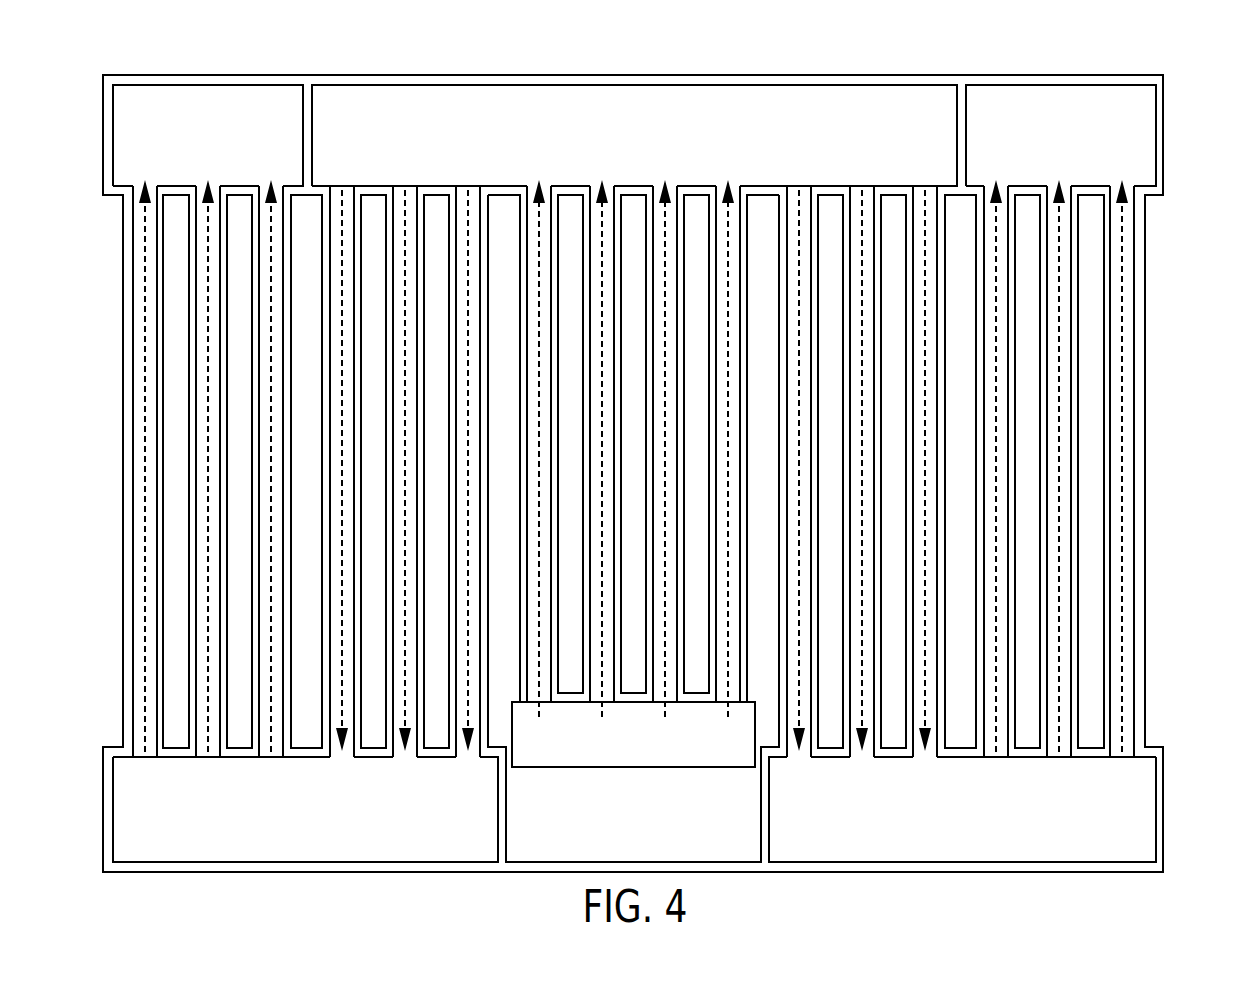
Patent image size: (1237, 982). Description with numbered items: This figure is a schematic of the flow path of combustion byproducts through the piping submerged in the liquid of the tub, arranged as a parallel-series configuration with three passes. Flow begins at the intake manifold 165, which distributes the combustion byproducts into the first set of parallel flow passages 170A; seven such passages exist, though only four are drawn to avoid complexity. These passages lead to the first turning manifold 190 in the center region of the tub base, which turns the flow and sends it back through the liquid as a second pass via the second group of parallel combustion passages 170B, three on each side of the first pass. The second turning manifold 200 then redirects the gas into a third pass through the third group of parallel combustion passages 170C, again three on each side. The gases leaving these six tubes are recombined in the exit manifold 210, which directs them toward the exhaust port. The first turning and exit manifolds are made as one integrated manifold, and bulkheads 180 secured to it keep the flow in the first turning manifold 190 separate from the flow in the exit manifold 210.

The intake manifold 165 is at (668, 768).
The first set of parallel flow passages 170A is at (757, 175).
The second group of parallel combustion passages 170B is at (328, 763).
The third group of parallel combustion passages 170C is at (133, 175).
The bulkheads 180 is at (303, 122).
The first turning manifold 190 is at (722, 78).
The second turning manifold 200 is at (1163, 845).
The exit manifold 210 is at (1163, 125).